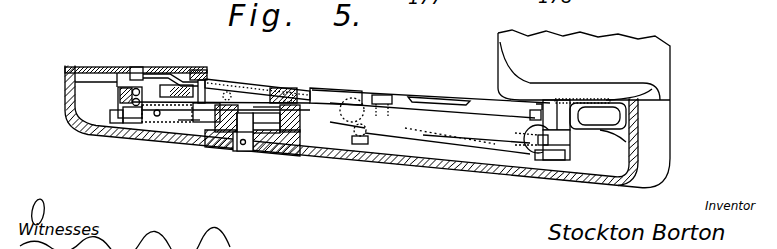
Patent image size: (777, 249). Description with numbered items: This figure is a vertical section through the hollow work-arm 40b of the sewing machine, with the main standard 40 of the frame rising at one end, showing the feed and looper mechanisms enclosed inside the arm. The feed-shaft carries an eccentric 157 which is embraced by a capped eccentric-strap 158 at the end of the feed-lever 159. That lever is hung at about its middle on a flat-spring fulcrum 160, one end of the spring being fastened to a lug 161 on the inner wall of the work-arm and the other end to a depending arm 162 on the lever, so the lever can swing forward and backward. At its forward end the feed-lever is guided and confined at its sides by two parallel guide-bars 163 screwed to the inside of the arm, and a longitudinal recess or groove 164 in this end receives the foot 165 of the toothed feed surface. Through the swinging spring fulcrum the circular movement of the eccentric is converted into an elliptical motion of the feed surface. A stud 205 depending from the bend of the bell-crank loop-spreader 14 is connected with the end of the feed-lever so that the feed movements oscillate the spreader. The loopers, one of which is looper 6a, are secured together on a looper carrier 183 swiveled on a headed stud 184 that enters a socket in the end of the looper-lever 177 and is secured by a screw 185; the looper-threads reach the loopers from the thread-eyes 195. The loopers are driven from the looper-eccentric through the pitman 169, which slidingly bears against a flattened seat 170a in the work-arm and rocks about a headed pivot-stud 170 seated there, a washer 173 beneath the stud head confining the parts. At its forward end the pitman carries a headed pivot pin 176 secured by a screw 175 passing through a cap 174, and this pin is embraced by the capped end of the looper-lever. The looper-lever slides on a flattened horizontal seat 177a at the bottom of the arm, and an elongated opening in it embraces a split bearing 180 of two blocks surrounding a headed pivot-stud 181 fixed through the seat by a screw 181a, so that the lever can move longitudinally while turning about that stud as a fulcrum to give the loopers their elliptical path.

The looper 6a is at (147, 80).
The loop-spreader 14 is at (176, 84).
The main standard 40 is at (644, 52).
The work-arm 40b is at (410, 164).
The eccentric 157 is at (537, 160).
The eccentric-strap 158 is at (532, 114).
The feed-lever 159 is at (432, 116).
The flat-spring fulcrum 160 is at (365, 95).
The lug 161 is at (388, 97).
The depending arm 162 is at (348, 114).
The guide-bars 163 is at (298, 93).
The recess or groove 164 is at (283, 89).
The foot 165 is at (247, 83).
The pitman 169 is at (618, 114).
The headed pivot-stud 170 is at (609, 97).
The flattened seat 170a is at (613, 133).
The washer 173 is at (637, 89).
The cap 174 is at (551, 110).
The screw 175 is at (541, 108).
The headed pivot pin 176 is at (560, 162).
The looper-lever 177 is at (498, 140).
The flattened horizontal seat 177a is at (272, 128).
The split bearing 180 is at (230, 147).
The headed pivot-stud 181 is at (244, 128).
The screw 181a is at (238, 142).
The looper carrier 183 is at (125, 118).
The headed stud 184 is at (115, 121).
The screw 185 is at (157, 117).
The thread-eyes 195 is at (119, 99).
The stud 205 is at (187, 153).